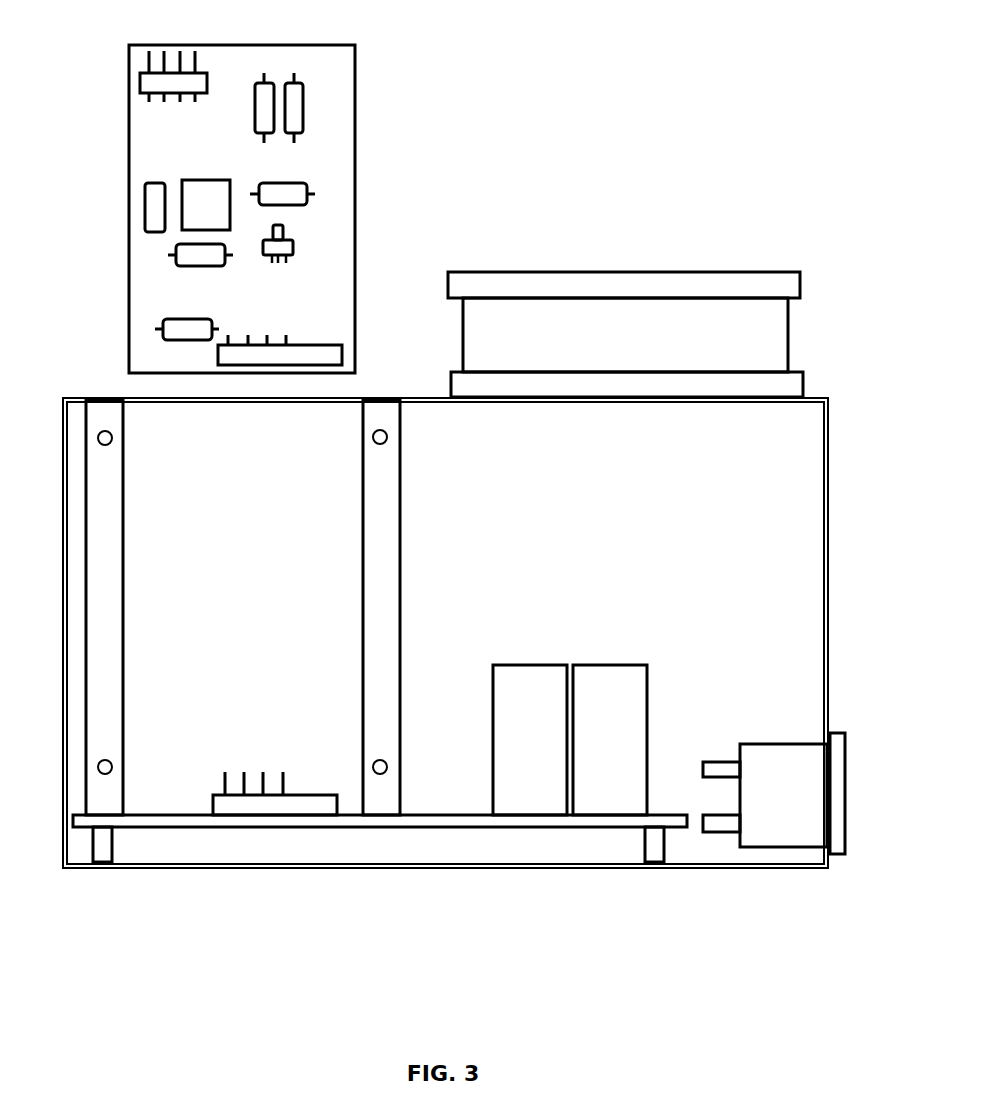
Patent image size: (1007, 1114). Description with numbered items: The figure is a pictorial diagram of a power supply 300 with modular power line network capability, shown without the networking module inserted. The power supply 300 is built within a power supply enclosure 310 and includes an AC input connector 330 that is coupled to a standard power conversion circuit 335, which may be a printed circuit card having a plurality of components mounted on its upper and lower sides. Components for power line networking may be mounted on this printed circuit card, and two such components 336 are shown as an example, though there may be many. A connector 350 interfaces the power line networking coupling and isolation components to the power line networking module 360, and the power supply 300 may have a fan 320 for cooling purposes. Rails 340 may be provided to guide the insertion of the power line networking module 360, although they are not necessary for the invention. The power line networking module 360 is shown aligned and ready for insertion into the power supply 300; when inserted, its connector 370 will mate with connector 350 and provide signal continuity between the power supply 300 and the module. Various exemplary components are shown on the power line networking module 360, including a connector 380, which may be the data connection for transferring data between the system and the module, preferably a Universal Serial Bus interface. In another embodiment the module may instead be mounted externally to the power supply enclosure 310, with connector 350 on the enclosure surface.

The power supply 300 is at (625, 63).
The power supply enclosure 310 is at (821, 396).
The fan 320 is at (568, 269).
The AC input connector 330 is at (792, 849).
The power conversion circuit 335 is at (606, 829).
The components 336 is at (539, 661).
The rails 340 is at (126, 590).
The connector 350 is at (236, 819).
The power line networking module 360 is at (357, 111).
The connector 370 is at (326, 342).
The connector 380 is at (138, 76).